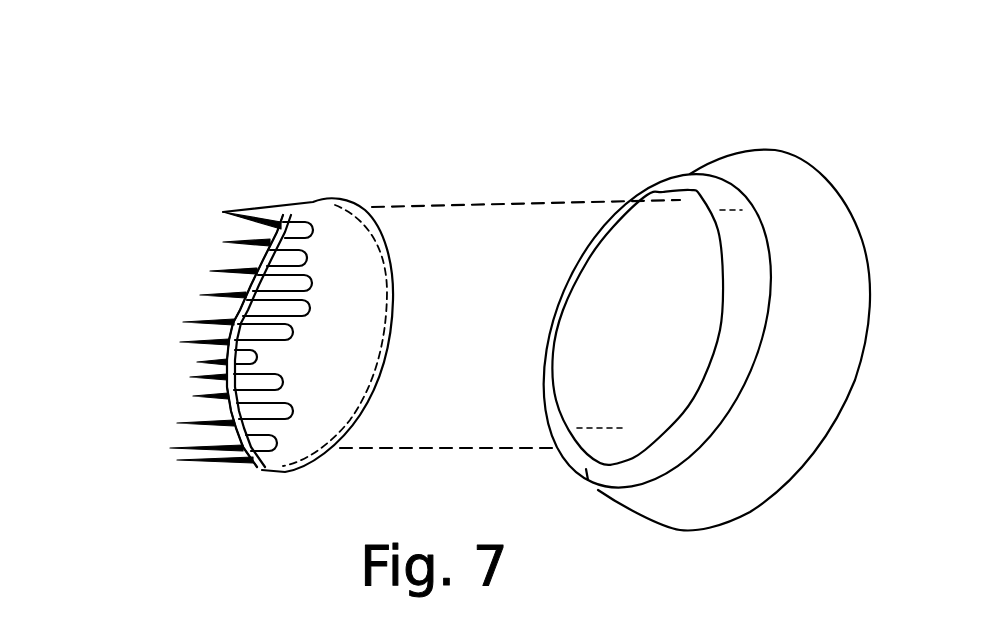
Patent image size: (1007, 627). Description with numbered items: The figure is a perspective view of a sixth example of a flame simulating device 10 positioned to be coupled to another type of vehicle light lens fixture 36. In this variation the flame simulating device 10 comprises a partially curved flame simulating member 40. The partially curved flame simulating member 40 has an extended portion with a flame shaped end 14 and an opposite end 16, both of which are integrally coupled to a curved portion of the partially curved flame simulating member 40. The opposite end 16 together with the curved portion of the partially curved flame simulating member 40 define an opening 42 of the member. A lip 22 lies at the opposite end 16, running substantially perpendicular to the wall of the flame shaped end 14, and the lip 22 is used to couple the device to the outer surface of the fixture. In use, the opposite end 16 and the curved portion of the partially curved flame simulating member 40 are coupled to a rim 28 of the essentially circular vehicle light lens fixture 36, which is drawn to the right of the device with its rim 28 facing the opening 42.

The flame simulating device 10 is at (193, 318).
The flame shaped end 14 is at (250, 260).
The opposite end 16 is at (393, 283).
The lip 22 is at (248, 263).
The rim 28 is at (693, 185).
The vehicle light lens fixture 36 is at (562, 470).
The partially curved flame simulating member 40 is at (338, 247).
The opening 42 is at (232, 290).